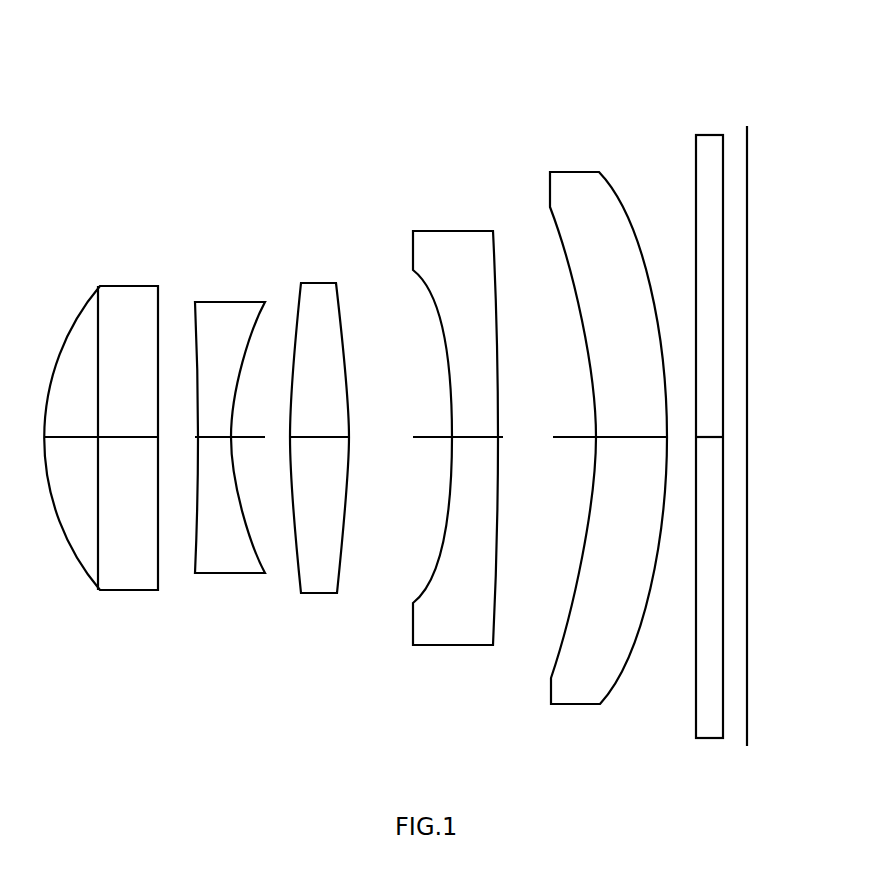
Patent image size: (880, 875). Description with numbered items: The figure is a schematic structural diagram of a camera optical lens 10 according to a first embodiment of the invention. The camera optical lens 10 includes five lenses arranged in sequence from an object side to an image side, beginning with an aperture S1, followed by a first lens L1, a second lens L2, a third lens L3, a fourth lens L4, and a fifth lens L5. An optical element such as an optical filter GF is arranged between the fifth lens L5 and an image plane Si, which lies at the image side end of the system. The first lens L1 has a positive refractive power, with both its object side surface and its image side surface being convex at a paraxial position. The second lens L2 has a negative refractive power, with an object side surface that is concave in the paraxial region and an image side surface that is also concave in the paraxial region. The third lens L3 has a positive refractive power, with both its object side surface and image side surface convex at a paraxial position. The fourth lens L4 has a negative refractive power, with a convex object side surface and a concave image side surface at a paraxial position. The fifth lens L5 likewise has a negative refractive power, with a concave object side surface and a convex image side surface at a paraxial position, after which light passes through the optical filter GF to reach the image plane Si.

The camera optical lens 10 is at (452, 43).
The aperture S1 is at (96, 425).
The first lens L1 is at (101, 425).
The second lens L2 is at (230, 423).
The third lens L3 is at (319, 424).
The fourth lens L4 is at (458, 427).
The fifth lens L5 is at (608, 426).
The optical filter GF is at (708, 426).
The image plane Si is at (743, 425).